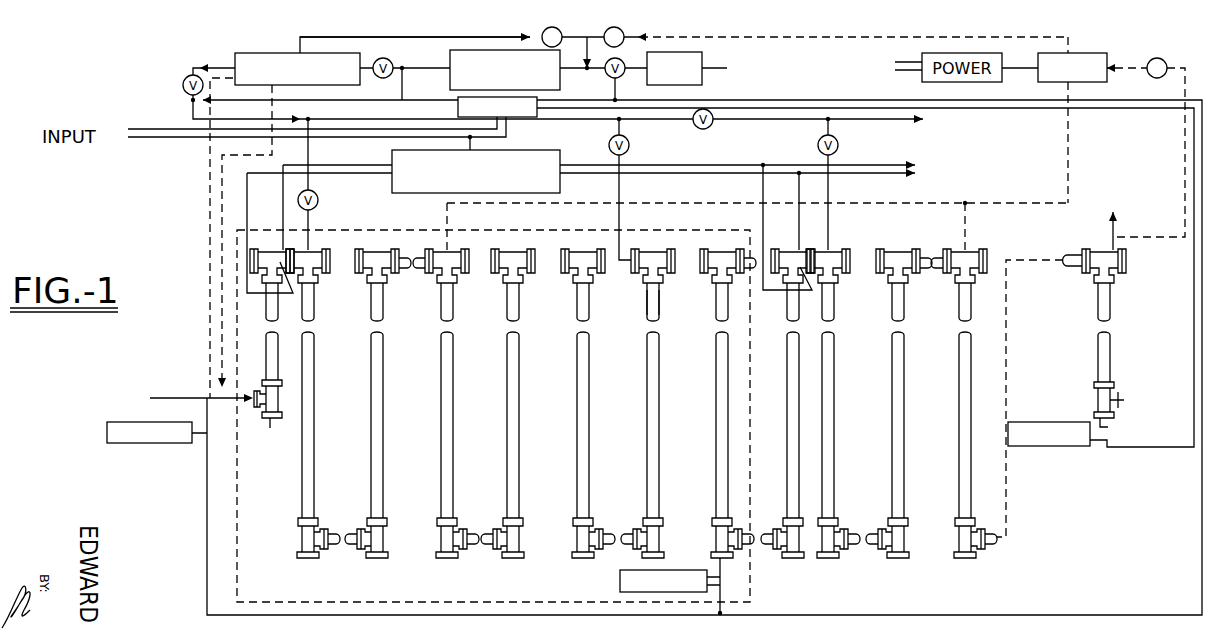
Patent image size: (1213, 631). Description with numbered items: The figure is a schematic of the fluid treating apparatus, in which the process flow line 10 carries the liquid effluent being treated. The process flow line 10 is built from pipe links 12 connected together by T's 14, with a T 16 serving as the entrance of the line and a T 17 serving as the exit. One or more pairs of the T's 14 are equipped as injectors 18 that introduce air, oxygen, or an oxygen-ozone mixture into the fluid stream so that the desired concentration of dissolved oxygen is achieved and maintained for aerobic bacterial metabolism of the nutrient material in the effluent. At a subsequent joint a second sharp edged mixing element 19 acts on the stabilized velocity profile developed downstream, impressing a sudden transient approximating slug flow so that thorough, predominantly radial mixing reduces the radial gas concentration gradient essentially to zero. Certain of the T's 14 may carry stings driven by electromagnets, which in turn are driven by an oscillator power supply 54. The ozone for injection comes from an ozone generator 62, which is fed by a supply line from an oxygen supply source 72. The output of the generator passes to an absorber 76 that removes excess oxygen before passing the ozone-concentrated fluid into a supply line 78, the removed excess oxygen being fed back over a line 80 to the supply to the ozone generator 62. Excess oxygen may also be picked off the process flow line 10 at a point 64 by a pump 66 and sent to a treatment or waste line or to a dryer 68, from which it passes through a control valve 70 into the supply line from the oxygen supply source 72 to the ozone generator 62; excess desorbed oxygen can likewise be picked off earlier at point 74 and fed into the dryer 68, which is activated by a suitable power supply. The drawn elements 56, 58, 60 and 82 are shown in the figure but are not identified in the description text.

The process flow line 10 is at (264, 491).
The pipe link 12 is at (302, 465).
The T 14 is at (298, 541).
The entrance T 16 is at (276, 420).
The exit T 17 is at (1128, 404).
The injector 18 is at (665, 286).
The second sharp edged mixing element 19 is at (604, 534).
The oscillator power supply 54 is at (562, 138).
The conduit 56 is at (720, 566).
The sensor 58 is at (620, 584).
The power supply 60 is at (515, 117).
The ozone generator 62 is at (560, 84).
The pick-off point 64 is at (1095, 249).
The pump 66 is at (1157, 58).
The dryer 68 is at (1090, 53).
The control valve 70 is at (621, 30).
The oxygen supply source 72 is at (701, 68).
The pick-off point 74 is at (452, 278).
The absorber 76 is at (262, 33).
The supply line 78 is at (208, 153).
The line 80 is at (377, 37).
The conduit 82 is at (402, 96).